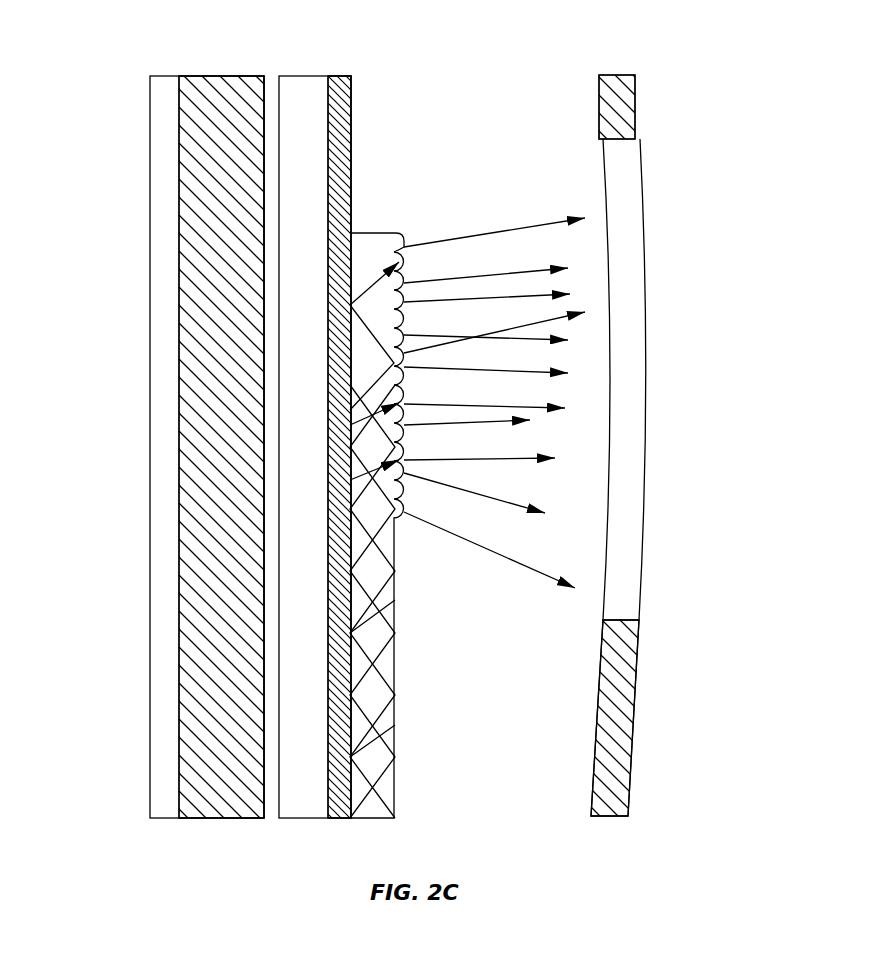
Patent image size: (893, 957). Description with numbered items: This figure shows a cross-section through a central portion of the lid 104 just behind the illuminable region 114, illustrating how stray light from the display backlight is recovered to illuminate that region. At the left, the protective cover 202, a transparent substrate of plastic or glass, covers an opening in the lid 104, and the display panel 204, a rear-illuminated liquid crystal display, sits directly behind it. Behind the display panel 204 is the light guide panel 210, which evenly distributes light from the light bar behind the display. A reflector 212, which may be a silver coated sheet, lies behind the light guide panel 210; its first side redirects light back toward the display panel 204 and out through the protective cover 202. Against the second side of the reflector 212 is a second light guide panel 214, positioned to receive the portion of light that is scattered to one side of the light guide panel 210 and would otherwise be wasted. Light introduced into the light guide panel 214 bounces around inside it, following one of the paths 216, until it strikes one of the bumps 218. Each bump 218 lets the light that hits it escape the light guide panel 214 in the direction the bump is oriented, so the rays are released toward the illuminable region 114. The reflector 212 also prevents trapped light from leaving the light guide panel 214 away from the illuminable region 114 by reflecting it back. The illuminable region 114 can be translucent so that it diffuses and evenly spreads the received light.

The protective cover 202 is at (150, 383).
The display panel 204 is at (238, 395).
The light guide panel 210 is at (319, 395).
The reflector 212 is at (340, 76).
The light guide panel 214 is at (380, 233).
The paths 216 is at (395, 680).
The bumps 218 is at (404, 245).
The illuminable region 114 is at (645, 608).
The lid 104 is at (632, 763).